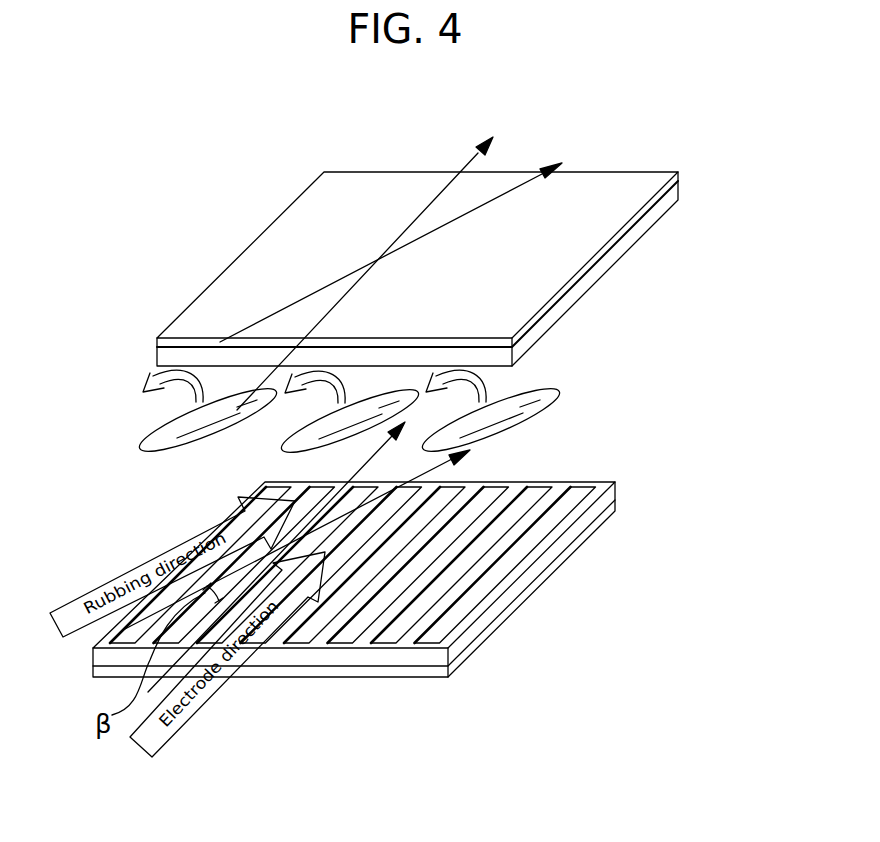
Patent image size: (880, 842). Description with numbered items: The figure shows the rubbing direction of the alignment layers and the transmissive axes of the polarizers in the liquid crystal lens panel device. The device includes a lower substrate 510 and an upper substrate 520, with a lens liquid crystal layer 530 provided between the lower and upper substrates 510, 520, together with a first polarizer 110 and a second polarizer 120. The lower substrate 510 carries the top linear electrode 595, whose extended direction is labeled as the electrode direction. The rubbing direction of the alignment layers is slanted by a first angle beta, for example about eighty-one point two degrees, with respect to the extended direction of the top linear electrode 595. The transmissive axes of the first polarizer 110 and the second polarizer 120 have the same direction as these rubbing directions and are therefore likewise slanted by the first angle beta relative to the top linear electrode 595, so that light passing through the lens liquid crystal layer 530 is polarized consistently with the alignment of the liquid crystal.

The second polarizer 120 is at (673, 182).
The upper substrate 520 is at (643, 257).
The lens liquid crystal layer 530 is at (537, 402).
The first polarizer 110 is at (610, 510).
The lower substrate 510 is at (578, 575).
The top linear electrode 595 is at (417, 608).